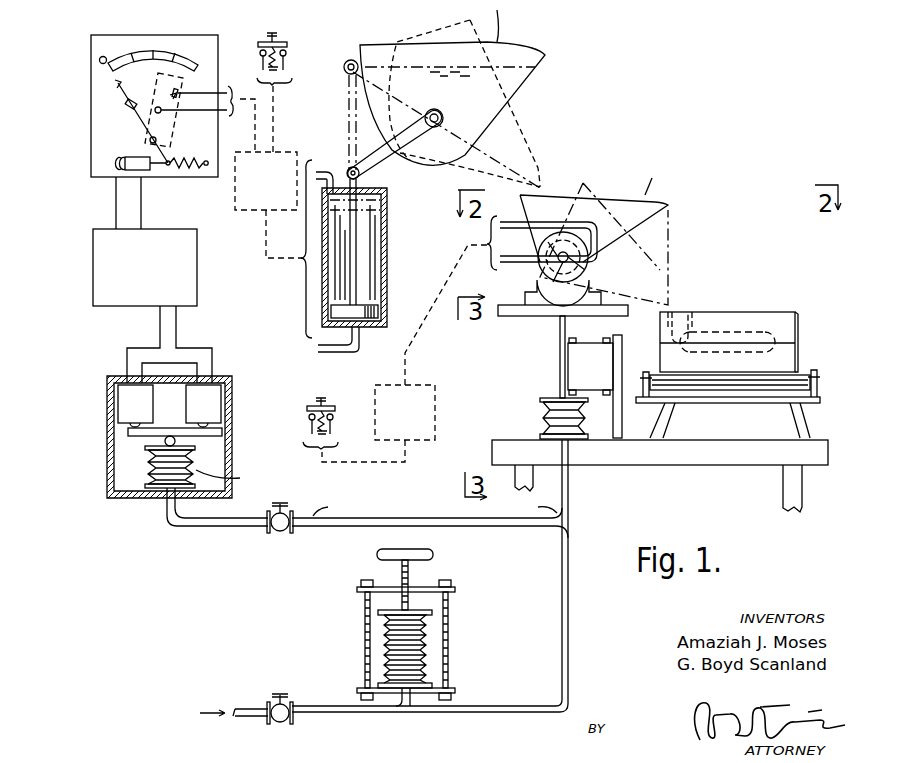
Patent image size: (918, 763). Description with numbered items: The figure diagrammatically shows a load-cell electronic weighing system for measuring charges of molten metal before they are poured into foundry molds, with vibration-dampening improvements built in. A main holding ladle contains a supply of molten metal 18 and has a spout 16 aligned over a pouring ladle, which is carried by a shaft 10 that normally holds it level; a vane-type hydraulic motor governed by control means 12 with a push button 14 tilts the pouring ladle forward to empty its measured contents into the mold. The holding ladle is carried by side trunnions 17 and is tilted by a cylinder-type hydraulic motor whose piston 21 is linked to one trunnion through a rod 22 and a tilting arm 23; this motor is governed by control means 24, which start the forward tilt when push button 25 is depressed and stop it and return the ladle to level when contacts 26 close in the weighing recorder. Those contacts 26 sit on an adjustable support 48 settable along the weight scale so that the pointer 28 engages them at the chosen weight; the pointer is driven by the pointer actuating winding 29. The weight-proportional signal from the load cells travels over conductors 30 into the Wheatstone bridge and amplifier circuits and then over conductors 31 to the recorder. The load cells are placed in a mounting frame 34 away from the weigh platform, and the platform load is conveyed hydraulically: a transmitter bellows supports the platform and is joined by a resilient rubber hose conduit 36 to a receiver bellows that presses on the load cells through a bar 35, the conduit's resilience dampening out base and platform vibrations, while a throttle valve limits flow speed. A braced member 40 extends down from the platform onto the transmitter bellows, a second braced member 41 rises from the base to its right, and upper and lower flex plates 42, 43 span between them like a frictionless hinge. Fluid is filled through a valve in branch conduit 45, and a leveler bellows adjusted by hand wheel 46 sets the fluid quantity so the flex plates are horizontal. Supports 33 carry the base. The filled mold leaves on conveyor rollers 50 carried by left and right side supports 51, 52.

The shaft 10 is at (558, 278).
The control means 12 is at (375, 418).
The push button 14 is at (307, 408).
The spout 16 is at (545, 47).
The side trunnions 17 is at (444, 112).
The molten metal 18 is at (385, 66).
The piston 21 is at (376, 306).
The rod 22 is at (360, 178).
The tilting arm 23 is at (360, 150).
The control means 24 is at (235, 183).
The push button 25 is at (287, 45).
The contacts 26 is at (191, 114).
The pointer 28 is at (131, 99).
The pointer actuating winding 29 is at (128, 157).
The conductors 30 is at (162, 338).
The conductors 31 is at (120, 213).
The base supports 33 is at (533, 482).
The mounting frame 34 is at (107, 448).
The bar 35 is at (195, 436).
The conduit 36 is at (445, 526).
The braced member 40 is at (537, 317).
The second braced member 41 is at (620, 345).
The upper flex plate 42 is at (592, 343).
The lower flex plate 43 is at (595, 393).
The branch conduit 45 is at (500, 706).
The hand wheel 46 is at (377, 553).
The adjustable support 48 is at (176, 127).
The rollers 50 is at (742, 392).
The left side support 51 is at (645, 372).
The right side support 52 is at (817, 383).